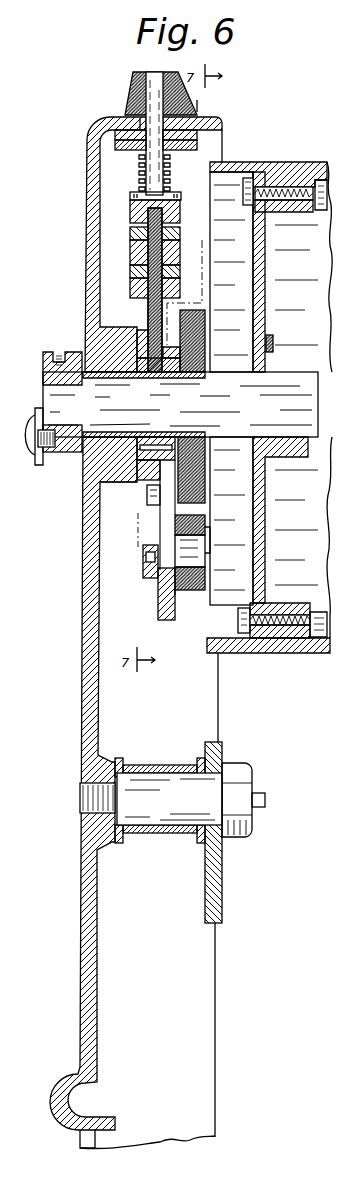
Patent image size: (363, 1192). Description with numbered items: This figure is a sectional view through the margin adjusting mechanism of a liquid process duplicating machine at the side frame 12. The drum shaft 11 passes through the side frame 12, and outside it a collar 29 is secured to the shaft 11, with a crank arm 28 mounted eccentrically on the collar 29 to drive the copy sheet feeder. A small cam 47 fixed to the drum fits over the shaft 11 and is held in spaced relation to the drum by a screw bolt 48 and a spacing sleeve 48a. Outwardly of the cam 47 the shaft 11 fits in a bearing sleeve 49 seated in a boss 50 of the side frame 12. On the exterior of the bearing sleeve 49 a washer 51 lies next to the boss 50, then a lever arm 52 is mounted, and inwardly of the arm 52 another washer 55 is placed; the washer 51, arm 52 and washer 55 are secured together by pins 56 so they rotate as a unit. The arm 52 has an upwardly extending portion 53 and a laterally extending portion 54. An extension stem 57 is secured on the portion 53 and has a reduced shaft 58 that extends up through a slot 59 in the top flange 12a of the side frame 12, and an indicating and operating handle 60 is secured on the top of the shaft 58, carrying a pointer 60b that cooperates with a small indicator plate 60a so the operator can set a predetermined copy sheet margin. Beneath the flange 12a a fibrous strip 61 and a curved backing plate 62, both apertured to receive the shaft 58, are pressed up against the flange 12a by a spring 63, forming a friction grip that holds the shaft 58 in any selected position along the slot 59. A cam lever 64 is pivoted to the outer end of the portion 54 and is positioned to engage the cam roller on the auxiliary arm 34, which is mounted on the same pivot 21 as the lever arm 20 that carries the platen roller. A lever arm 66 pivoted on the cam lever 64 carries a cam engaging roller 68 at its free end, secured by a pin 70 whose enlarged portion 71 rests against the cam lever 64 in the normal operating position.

The shaft 11 is at (180, 404).
The side frame 12 is at (90, 556).
The top flange 12a is at (222, 128).
The lever arm 20 is at (205, 890).
The pivot 21 is at (172, 800).
The crank arm 28 is at (38, 466).
The collar 29 is at (43, 366).
The auxiliary arm 34 is at (198, 760).
The cam 47 is at (205, 470).
The screw bolt 48 is at (273, 346).
The spacing sleeve 48a is at (222, 325).
The bearing sleeve 49 is at (107, 466).
The boss 50 is at (92, 482).
The washer 51 is at (143, 330).
The lever arm 52 is at (148, 307).
The upwardly extending portion 53 is at (152, 252).
The laterally extending portion 54 is at (146, 493).
The washer 55 is at (170, 364).
The pins 56 is at (192, 370).
The extension stem 57 is at (135, 213).
The reduced shaft 58 is at (140, 122).
The slot 59 is at (150, 125).
The indicating and operating handle 60 is at (135, 90).
The indicator plate 60a is at (222, 117).
The pointer 60b is at (198, 102).
The fibrous strip 61 is at (118, 134).
The curved backing plate 62 is at (120, 144).
The spring 63 is at (140, 183).
The cam lever 64 is at (170, 620).
The lever arm 66 is at (143, 570).
The cam engaging roller 68 is at (205, 582).
The pin 70 is at (205, 546).
The enlarged portion 71 is at (175, 588).